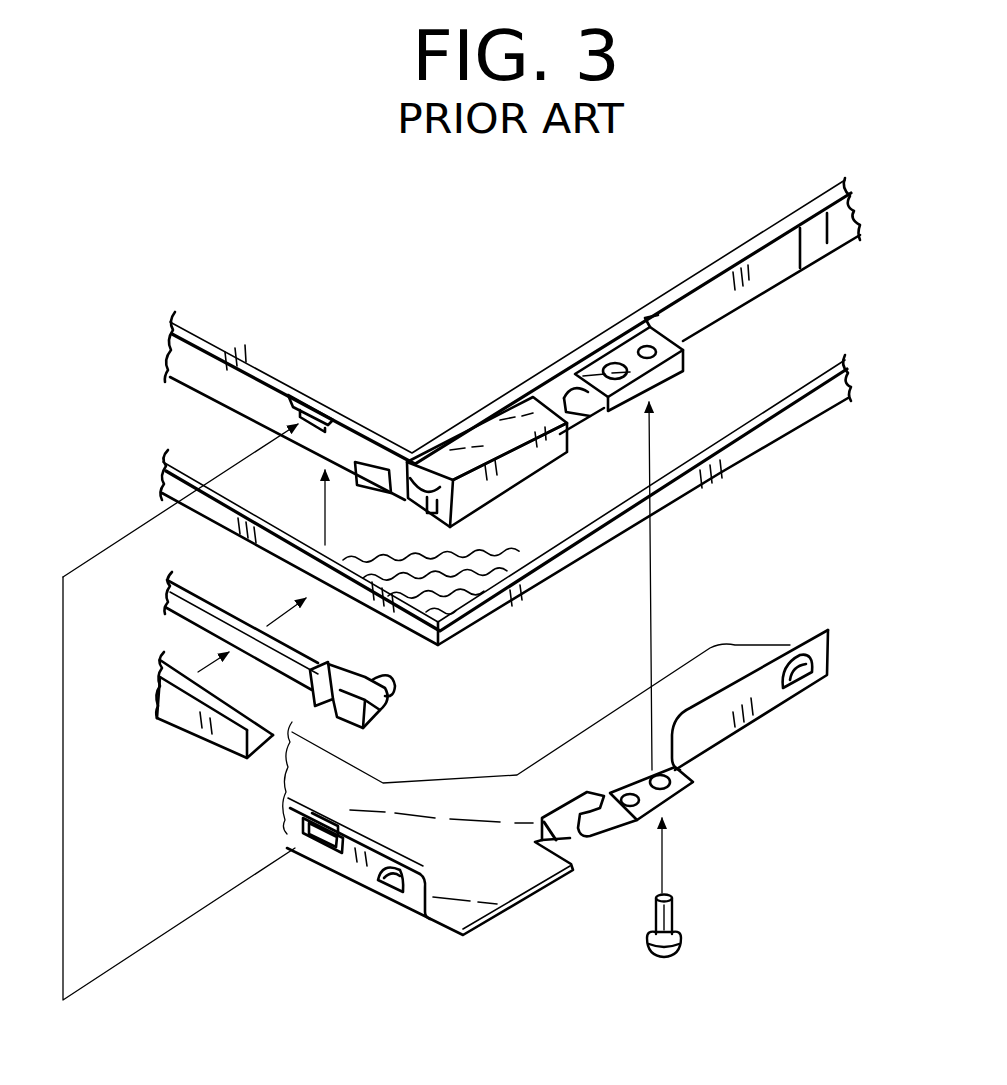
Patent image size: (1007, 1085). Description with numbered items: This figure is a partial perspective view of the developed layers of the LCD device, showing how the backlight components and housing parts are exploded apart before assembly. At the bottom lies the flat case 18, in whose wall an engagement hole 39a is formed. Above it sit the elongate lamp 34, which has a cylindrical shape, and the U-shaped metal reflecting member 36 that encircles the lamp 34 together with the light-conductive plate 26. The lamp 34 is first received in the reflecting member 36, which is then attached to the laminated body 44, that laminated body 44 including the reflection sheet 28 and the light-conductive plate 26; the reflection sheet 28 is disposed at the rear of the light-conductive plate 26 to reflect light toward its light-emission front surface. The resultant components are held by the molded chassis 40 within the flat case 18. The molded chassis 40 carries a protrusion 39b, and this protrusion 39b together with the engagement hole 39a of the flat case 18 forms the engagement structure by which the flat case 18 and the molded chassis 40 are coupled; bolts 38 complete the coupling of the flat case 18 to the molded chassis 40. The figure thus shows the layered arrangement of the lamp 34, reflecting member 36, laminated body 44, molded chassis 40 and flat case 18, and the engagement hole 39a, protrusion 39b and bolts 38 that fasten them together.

The flat case 18 is at (748, 726).
The light-conductive plate 26 is at (505, 529).
The reflection sheet 28 is at (522, 597).
The elongate lamp 34 is at (205, 618).
The reflecting member 36 is at (187, 730).
The bolts 38 is at (678, 905).
The engagement hole 39a is at (327, 848).
The protrusion 39b is at (298, 424).
The molded chassis 40 is at (772, 290).
The laminated body 44 is at (505, 529).